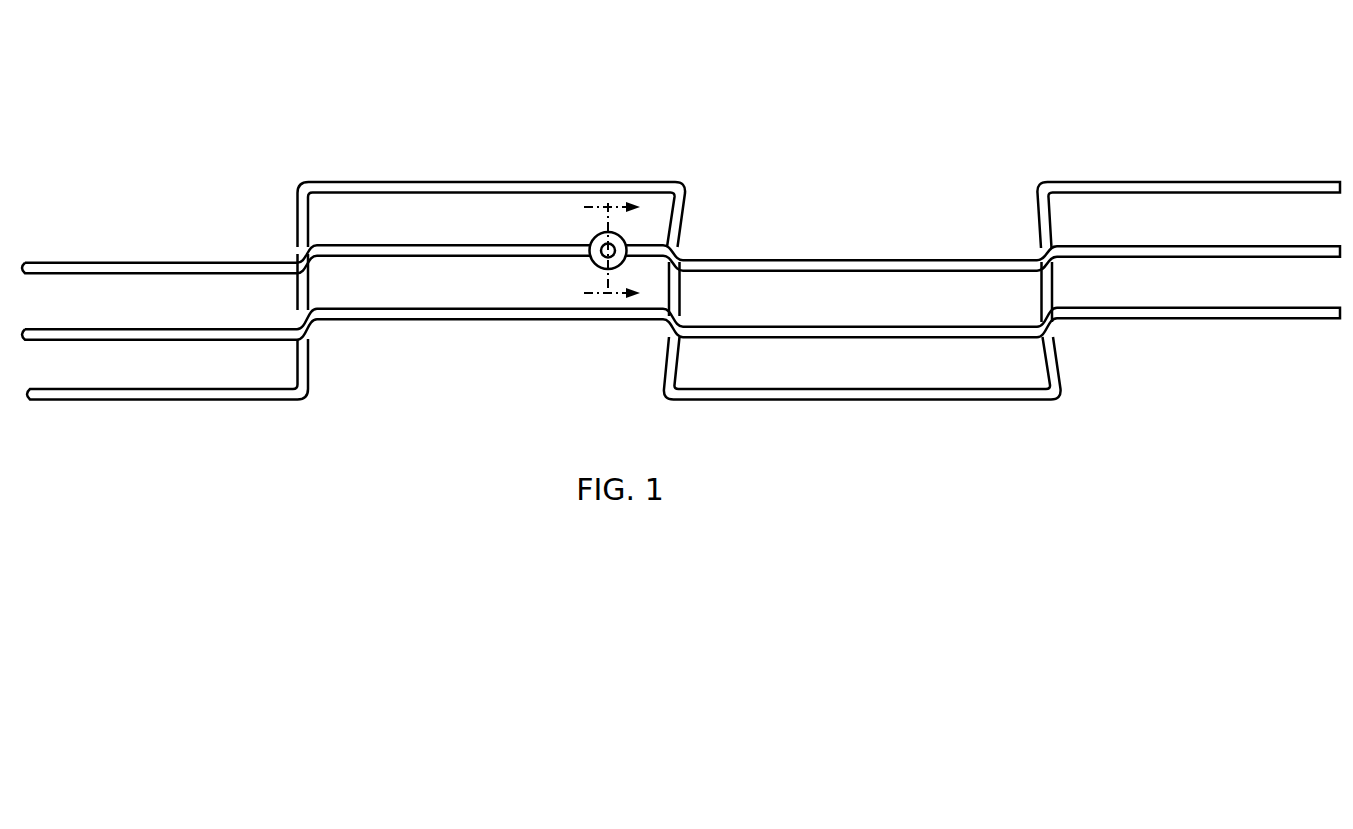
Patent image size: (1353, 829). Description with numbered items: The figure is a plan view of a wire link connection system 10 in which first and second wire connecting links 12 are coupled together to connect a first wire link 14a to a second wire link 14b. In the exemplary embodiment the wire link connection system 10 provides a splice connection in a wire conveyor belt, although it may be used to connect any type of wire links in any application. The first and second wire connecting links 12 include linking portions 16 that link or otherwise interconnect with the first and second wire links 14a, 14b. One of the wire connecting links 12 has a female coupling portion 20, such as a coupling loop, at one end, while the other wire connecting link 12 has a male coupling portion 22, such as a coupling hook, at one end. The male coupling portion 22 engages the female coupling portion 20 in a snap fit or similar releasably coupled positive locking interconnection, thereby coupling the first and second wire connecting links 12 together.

The wire link connection system 10 is at (578, 60).
The wire connecting link 12 is at (177, 327).
The first wire link 14a is at (428, 181).
The second wire link 14b is at (480, 321).
The linking portion 16 is at (266, 240).
The female coupling portion 20 is at (593, 236).
The male coupling portion 22 is at (600, 258).